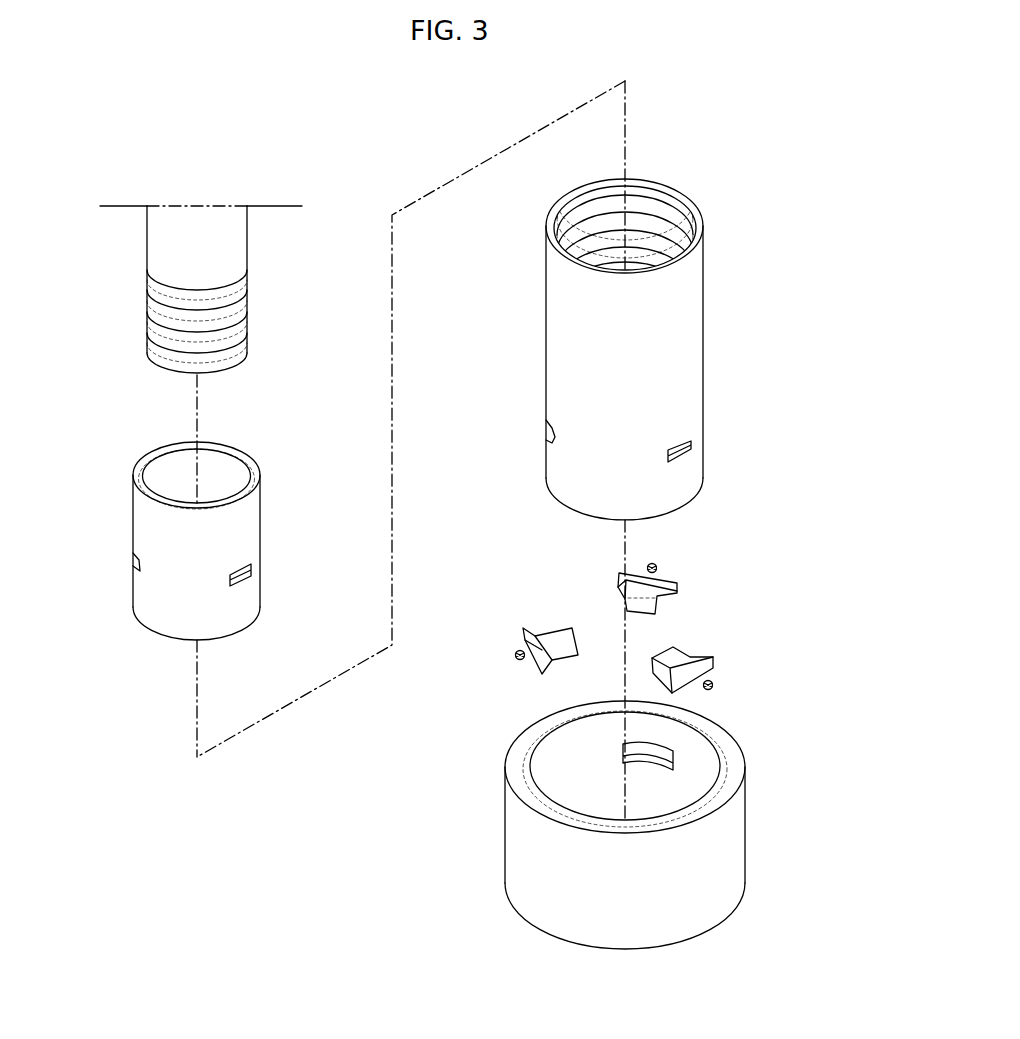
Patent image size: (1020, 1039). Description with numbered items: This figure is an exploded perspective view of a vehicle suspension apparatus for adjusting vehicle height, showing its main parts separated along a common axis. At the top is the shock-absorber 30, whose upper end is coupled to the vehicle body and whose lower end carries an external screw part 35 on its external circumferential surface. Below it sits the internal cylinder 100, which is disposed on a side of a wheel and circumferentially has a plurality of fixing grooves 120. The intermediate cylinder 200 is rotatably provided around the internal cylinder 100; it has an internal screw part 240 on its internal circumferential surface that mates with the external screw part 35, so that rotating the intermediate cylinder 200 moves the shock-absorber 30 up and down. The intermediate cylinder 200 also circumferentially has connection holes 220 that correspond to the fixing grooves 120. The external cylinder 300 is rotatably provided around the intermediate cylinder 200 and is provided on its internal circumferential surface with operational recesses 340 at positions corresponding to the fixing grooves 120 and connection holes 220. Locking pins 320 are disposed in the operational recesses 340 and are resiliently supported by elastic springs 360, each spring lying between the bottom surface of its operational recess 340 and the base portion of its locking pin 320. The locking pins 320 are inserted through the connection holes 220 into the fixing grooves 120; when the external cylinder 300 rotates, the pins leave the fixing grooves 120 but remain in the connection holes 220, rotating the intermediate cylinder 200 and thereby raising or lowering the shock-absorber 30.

The shock-absorber 30 is at (162, 239).
The external screw part 35 is at (150, 327).
The internal cylinder 100 is at (153, 530).
The fixing groove 120 is at (253, 568).
The intermediate cylinder 200 is at (688, 325).
The connection hole 220 is at (692, 445).
The internal screw part 240 is at (663, 210).
The external cylinder 300 is at (728, 842).
The locking pin 320 is at (677, 590).
The operational recess 340 is at (673, 752).
The elastic spring 360 is at (714, 683).